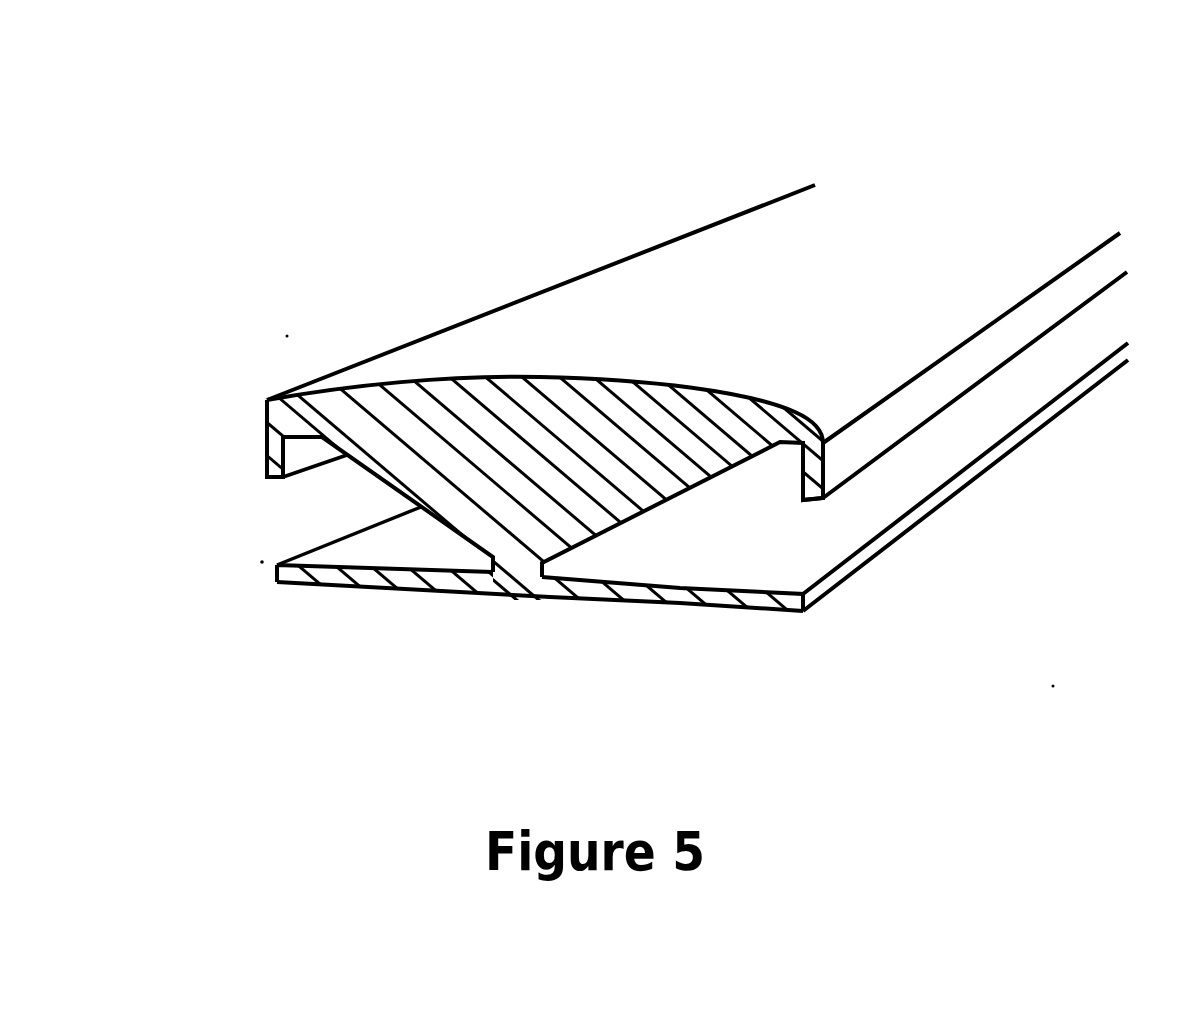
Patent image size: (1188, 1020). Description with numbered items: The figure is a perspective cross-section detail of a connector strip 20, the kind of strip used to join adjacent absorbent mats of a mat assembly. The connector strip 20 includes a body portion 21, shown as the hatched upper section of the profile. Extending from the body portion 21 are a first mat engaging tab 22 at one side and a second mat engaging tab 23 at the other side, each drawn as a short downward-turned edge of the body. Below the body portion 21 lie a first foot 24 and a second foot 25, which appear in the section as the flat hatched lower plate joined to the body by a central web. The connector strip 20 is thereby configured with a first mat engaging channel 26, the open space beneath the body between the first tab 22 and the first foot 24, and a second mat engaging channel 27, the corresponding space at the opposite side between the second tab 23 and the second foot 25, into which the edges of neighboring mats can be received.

The connector strip 20 is at (658, 374).
The body portion 21 is at (628, 297).
The first mat engaging tab 22 is at (267, 402).
The second mat engaging tab 23 is at (957, 363).
The first foot 24 is at (350, 572).
The second foot 25 is at (745, 597).
The first mat engaging channel 26 is at (350, 497).
The second mat engaging channel 27 is at (830, 516).